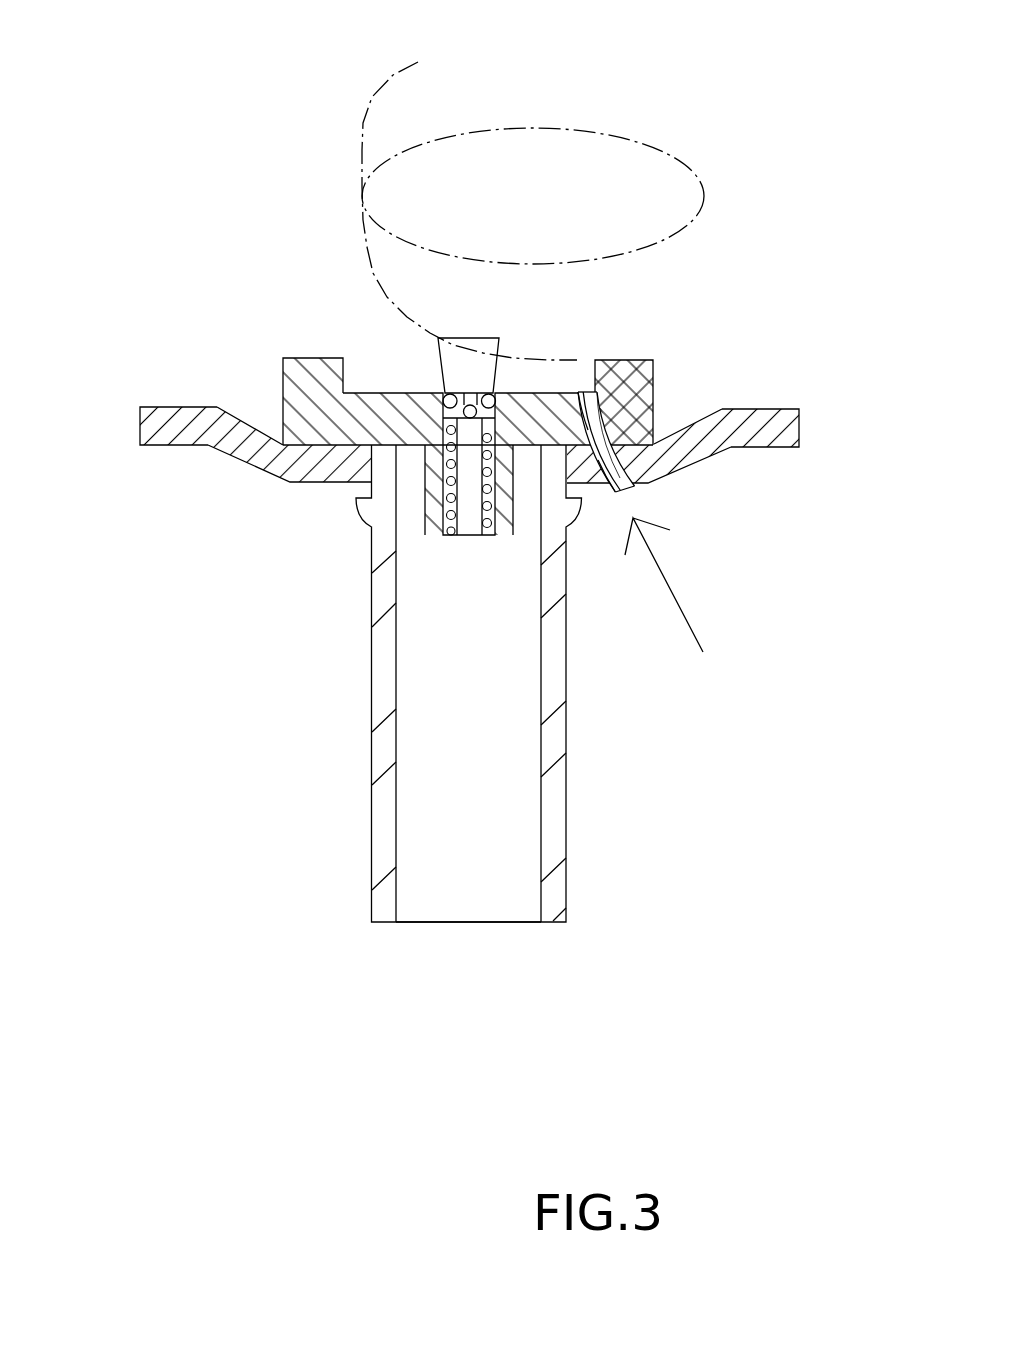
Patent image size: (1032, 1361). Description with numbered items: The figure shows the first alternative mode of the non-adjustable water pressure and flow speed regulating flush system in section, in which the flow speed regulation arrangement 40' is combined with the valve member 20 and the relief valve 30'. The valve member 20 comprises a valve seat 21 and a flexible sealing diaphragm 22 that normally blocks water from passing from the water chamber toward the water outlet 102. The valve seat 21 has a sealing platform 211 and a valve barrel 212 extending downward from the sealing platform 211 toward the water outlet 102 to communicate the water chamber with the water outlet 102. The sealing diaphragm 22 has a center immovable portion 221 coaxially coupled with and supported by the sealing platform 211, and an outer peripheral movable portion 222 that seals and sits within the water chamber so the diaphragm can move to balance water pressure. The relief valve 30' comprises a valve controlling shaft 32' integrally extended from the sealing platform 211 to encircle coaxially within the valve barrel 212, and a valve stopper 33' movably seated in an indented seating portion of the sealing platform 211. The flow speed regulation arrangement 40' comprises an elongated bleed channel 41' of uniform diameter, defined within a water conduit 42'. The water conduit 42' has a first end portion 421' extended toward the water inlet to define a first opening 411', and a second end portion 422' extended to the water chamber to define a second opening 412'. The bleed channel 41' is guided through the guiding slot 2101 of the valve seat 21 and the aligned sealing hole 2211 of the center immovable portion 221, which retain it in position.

The valve member 20 is at (173, 652).
The valve seat 21 is at (240, 707).
The sealing diaphragm 22 is at (150, 520).
The sealing platform 211 is at (298, 425).
The valve barrel 212 is at (380, 697).
The center immovable portion 221 is at (307, 468).
The outer peripheral movable portion 222 is at (175, 432).
The guiding slot 2101 is at (602, 394).
The sealing hole 2211 is at (600, 476).
The water outlet 102 is at (533, 937).
The relief valve 30' is at (351, 350).
The valve controlling shaft 32' is at (306, 369).
The valve stopper 33' is at (401, 384).
The flow speed regulation arrangement 40' is at (708, 423).
The elongated bleed channel 41' is at (708, 420).
The first opening 411' is at (704, 523).
The second opening 412' is at (624, 335).
The water conduit 42' is at (680, 397).
The first end portion 421' is at (696, 474).
The second end portion 422' is at (547, 356).